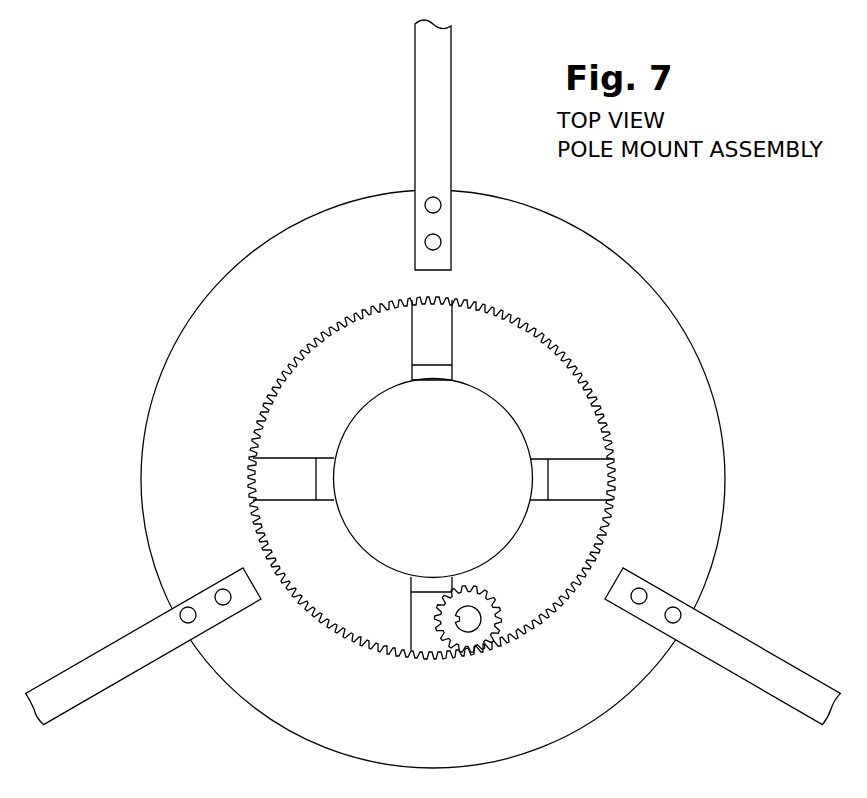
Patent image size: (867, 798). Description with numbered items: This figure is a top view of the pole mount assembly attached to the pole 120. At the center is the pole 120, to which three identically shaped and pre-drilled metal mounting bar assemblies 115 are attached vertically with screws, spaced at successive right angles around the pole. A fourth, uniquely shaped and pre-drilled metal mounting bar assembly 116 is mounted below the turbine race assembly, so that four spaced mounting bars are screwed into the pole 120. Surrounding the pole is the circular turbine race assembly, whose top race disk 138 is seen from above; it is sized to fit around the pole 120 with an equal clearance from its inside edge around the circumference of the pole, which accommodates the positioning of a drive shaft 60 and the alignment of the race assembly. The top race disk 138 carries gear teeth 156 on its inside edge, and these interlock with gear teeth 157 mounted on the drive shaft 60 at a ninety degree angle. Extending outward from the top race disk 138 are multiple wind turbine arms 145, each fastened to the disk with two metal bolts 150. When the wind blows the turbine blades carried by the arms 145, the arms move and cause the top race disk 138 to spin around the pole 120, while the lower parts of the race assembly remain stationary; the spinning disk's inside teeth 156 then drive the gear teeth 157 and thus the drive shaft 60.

The top race disk 138 is at (683, 362).
The gear teeth 156 is at (300, 590).
The pole 120 is at (445, 434).
The metal mounting bar assemblies 115 is at (452, 341).
The metal mounting bar assembly 116 is at (411, 583).
The gear teeth 157 is at (498, 603).
The drive shaft 60 is at (440, 621).
The wind turbine arms 145 is at (451, 69).
The metal bolts 150 is at (440, 237).